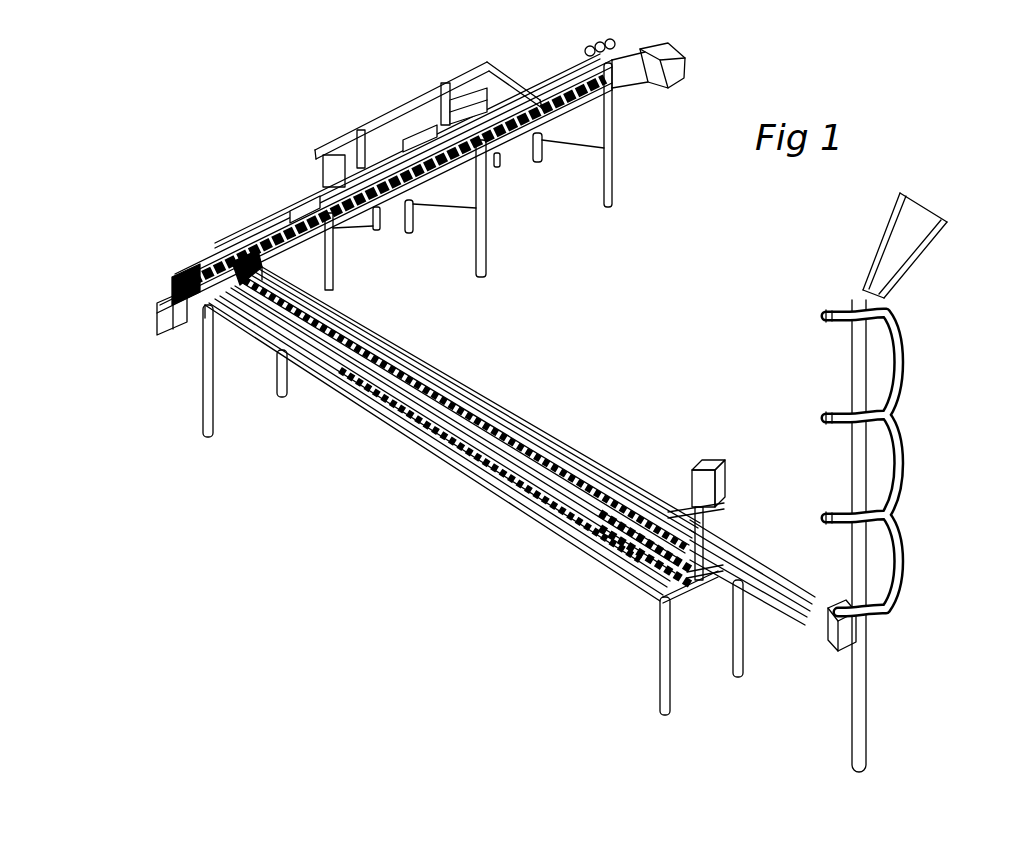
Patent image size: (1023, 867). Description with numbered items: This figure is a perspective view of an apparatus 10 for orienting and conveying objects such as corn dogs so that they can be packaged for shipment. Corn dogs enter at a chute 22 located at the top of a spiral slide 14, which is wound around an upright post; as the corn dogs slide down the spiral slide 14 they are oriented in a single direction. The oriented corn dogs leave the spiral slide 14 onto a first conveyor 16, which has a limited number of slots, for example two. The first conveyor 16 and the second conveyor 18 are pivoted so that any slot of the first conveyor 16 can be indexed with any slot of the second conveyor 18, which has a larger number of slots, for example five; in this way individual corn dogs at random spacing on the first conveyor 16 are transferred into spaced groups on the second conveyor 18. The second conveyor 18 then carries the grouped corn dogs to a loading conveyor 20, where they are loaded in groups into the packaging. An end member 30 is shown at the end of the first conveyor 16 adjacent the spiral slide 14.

The apparatus 10 is at (643, 425).
The spiral slide 14 is at (913, 413).
The first conveyor 16 is at (772, 563).
The second conveyor 18 is at (510, 410).
The loading conveyor 20 is at (513, 168).
The chute 22 is at (943, 243).
The conveyor end stop 30 is at (840, 613).